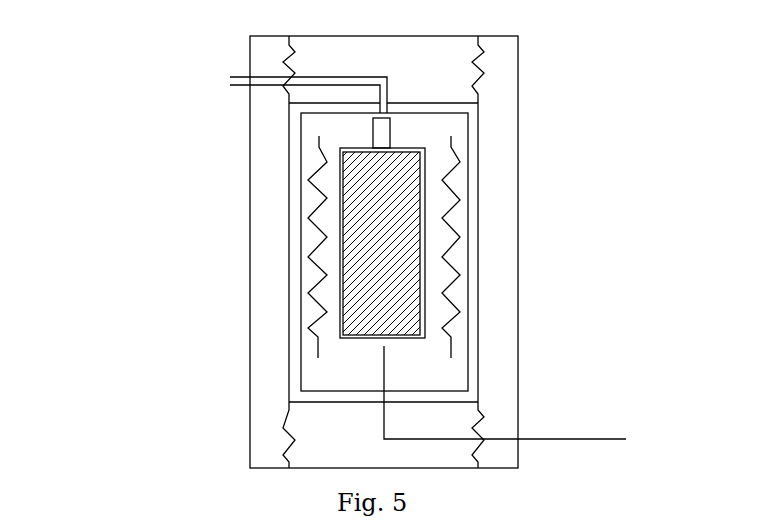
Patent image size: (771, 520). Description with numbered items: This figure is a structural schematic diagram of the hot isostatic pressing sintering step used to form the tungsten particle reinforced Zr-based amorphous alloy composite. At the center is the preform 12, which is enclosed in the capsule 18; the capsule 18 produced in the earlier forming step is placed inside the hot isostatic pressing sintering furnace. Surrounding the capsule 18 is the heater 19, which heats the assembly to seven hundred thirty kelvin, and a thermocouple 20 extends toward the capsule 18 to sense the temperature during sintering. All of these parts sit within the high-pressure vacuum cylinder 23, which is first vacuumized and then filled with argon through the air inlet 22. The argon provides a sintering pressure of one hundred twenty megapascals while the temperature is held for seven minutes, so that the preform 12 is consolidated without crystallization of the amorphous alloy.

The preform 12 is at (388, 294).
The capsule 18 is at (425, 203).
The heater 19 is at (452, 246).
The thermocouple 20 is at (387, 372).
The air inlet 22 is at (228, 86).
The high-pressure vacuum cylinder 23 is at (296, 253).